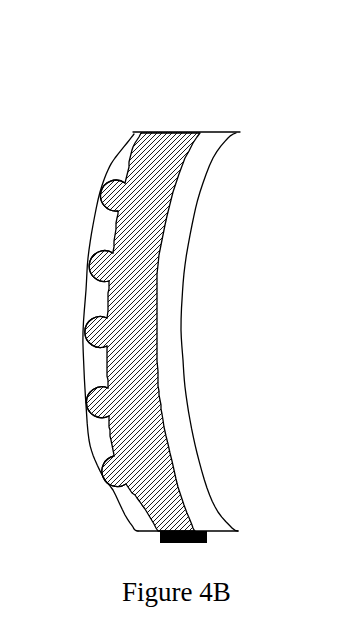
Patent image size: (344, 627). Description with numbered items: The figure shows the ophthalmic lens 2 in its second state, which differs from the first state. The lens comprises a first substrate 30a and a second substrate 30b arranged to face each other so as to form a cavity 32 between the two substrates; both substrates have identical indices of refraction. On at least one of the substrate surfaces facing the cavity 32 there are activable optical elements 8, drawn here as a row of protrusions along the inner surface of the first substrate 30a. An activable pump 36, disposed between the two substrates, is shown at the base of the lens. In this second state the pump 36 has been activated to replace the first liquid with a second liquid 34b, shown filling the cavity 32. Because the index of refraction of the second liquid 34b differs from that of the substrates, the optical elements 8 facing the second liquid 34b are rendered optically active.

The ophthalmic lens 2 is at (108, 153).
The activable optical element 8 is at (100, 400).
The first substrate 30a is at (131, 142).
The second substrate 30b is at (208, 143).
The cavity 32 is at (158, 213).
The second liquid 34b is at (137, 260).
The activable pump 36 is at (198, 526).